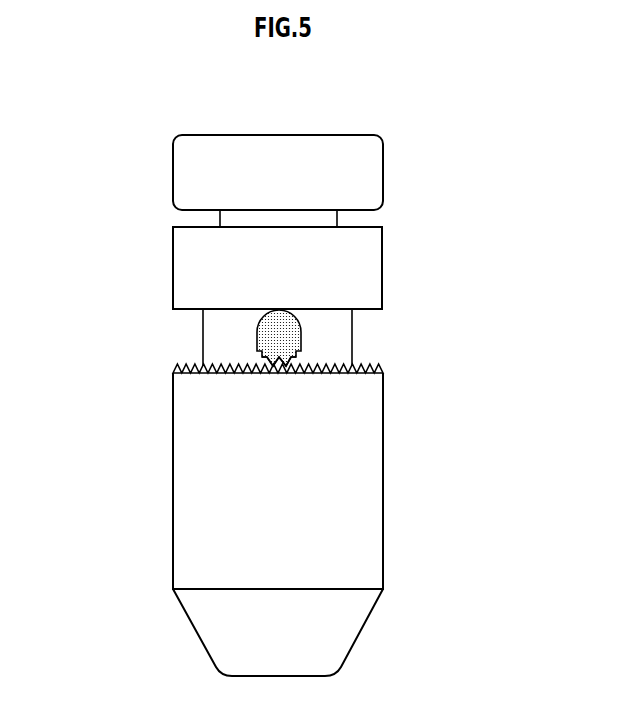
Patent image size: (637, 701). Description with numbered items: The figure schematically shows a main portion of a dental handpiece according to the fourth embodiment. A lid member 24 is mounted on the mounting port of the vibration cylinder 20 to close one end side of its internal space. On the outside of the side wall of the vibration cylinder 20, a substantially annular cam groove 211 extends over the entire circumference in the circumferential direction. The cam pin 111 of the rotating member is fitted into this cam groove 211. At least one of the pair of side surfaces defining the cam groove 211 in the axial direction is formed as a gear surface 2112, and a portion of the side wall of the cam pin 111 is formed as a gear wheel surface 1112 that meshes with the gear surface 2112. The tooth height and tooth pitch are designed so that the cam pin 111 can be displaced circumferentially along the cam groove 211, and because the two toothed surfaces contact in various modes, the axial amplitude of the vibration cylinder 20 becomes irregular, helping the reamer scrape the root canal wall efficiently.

The lid member 24 is at (236, 125).
The vibration cylinder 20 is at (146, 266).
The cam groove 211 is at (372, 325).
The cam pin 111 is at (287, 318).
The gear wheel surface 1112 is at (305, 346).
The gear surface 2112 is at (186, 361).